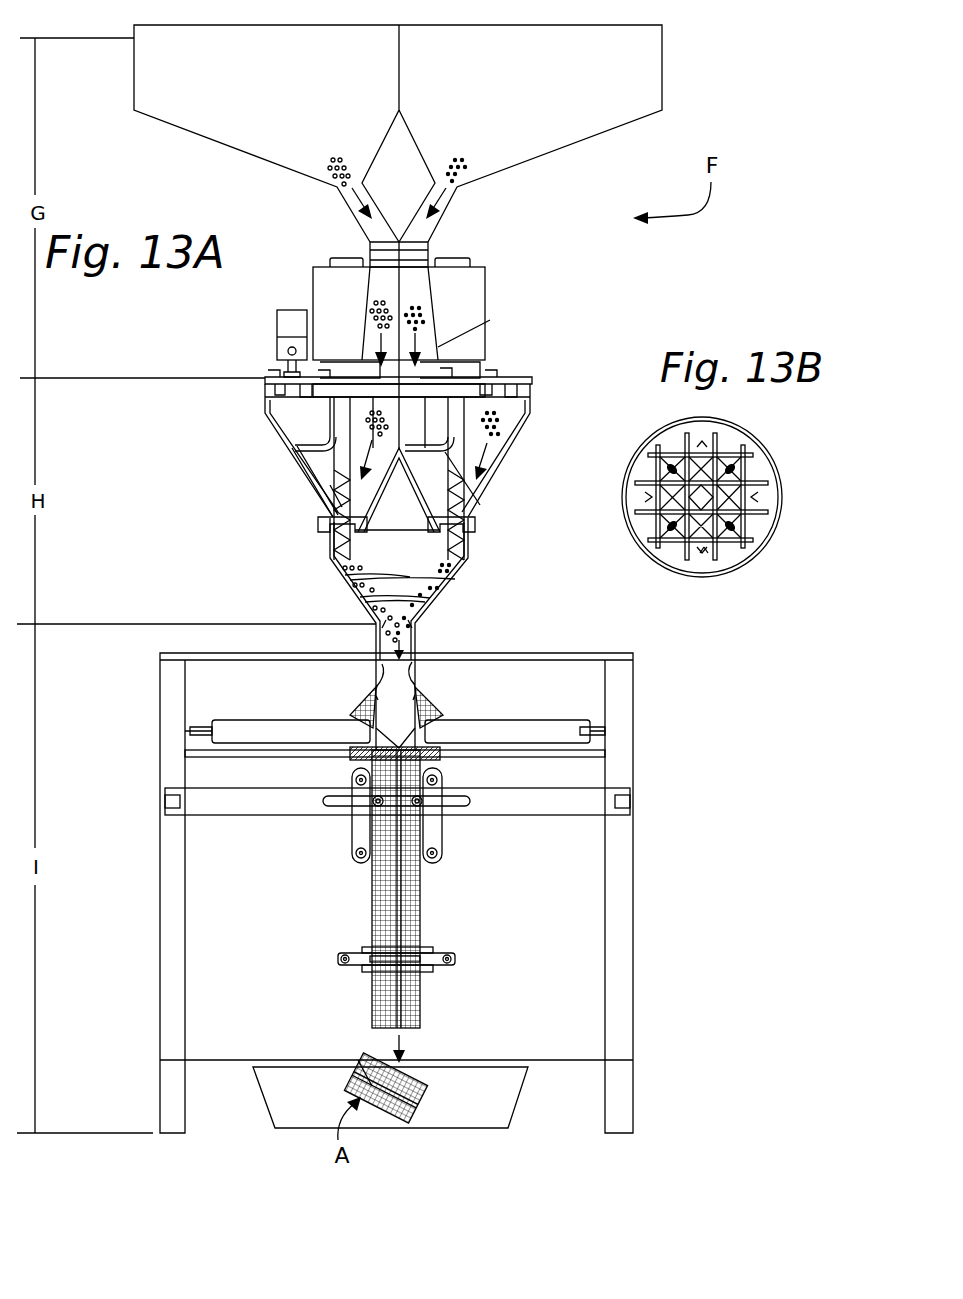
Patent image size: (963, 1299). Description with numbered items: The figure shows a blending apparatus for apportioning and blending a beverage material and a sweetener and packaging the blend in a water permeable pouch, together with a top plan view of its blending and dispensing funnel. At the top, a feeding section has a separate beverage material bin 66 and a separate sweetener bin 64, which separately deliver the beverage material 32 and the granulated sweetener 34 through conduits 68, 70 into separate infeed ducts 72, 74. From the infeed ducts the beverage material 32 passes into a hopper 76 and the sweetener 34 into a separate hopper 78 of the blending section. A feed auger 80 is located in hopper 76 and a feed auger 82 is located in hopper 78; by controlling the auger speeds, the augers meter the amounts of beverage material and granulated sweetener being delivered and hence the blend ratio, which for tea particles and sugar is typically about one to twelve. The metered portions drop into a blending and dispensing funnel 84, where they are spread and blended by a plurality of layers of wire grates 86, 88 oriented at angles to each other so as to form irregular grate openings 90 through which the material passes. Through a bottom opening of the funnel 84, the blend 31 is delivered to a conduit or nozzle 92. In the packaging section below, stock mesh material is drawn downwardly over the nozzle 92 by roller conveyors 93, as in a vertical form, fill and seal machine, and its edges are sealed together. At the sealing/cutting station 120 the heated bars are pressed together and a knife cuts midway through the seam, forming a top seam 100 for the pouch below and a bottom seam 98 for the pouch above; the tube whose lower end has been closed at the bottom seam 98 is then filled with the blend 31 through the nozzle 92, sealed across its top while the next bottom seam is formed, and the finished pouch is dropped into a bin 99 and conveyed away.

In FIG. 13A, the sweetener bin 64 is at (258, 97).
In FIG. 13A, the beverage material bin 66 is at (511, 97).
In FIG. 13A, the conduit 68 is at (352, 210).
In FIG. 13A, the conduit 70 is at (446, 210).
In FIG. 13A, the sweetener 34 is at (374, 303).
In FIG. 13A, the beverage material 32 is at (423, 317).
In FIG. 13A, the infeed duct 72 is at (365, 347).
In FIG. 13A, the infeed duct 74 is at (490, 320).
In FIG. 13A, the hopper 76 is at (515, 425).
In FIG. 13A, the hopper 78 is at (325, 477).
In FIG. 13A, the feed auger 80 is at (470, 507).
In FIG. 13A, the feed auger 82 is at (325, 487).
In FIG. 13A, the blending and dispensing funnel 84 is at (445, 590).
In FIG. 13B, the blending and dispensing funnel 84 is at (782, 478).
In FIG. 13A, the blend 31 is at (405, 633).
In FIG. 13A, the nozzle 92 is at (420, 672).
In FIG. 13A, the roller conveyors 93 is at (350, 830).
In FIG. 13A, the sealing/cutting station 120 is at (325, 958).
In FIG. 13A, the top seam 100 is at (363, 1057).
In FIG. 13A, the bottom seam 98 is at (418, 1093).
In FIG. 13A, the bin 99 is at (515, 1102).
In FIG. 13B, the irregular grate openings 90 is at (733, 458).
In FIG. 13B, the wire grate 86 is at (745, 532).
In FIG. 13B, the wire grate 88 is at (705, 550).